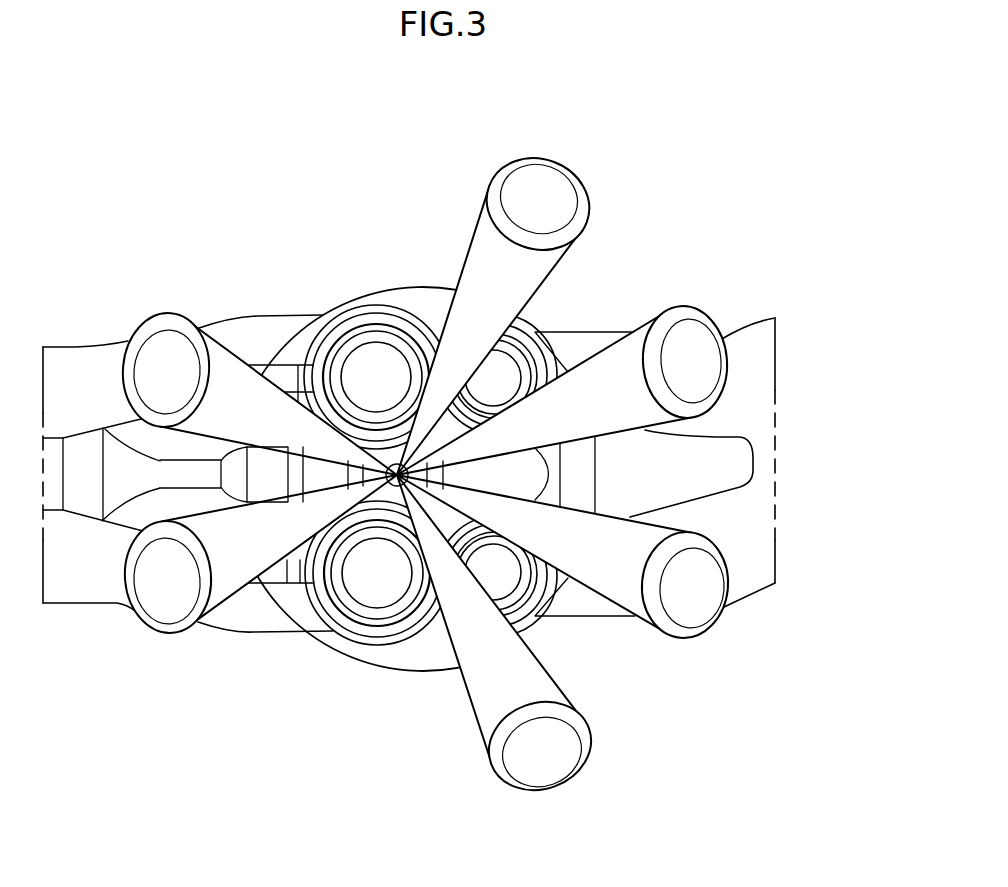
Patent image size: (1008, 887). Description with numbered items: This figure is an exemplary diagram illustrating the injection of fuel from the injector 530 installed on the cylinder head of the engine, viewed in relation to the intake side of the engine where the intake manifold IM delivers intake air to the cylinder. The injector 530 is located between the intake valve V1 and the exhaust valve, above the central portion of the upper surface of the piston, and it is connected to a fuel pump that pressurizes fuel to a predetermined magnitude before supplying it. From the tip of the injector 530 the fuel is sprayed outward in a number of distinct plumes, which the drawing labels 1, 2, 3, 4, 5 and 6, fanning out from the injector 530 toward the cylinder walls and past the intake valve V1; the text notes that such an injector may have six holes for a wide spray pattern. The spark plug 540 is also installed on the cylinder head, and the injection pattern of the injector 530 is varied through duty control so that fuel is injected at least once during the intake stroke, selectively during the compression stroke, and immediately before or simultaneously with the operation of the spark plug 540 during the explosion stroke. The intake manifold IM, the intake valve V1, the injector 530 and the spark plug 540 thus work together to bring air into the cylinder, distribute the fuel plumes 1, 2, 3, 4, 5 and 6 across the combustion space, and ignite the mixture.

The intake manifold IM is at (83, 360).
The intake valve V1 is at (372, 360).
The injector 530 is at (394, 484).
The spark plug 540 is at (528, 478).
The first cylinder 1 is at (500, 639).
The second cylinder 2 is at (564, 558).
The third cylinder 3 is at (564, 389).
The fourth cylinder 4 is at (499, 309).
The fifth cylinder 5 is at (257, 392).
The sixth cylinder 6 is at (258, 556).